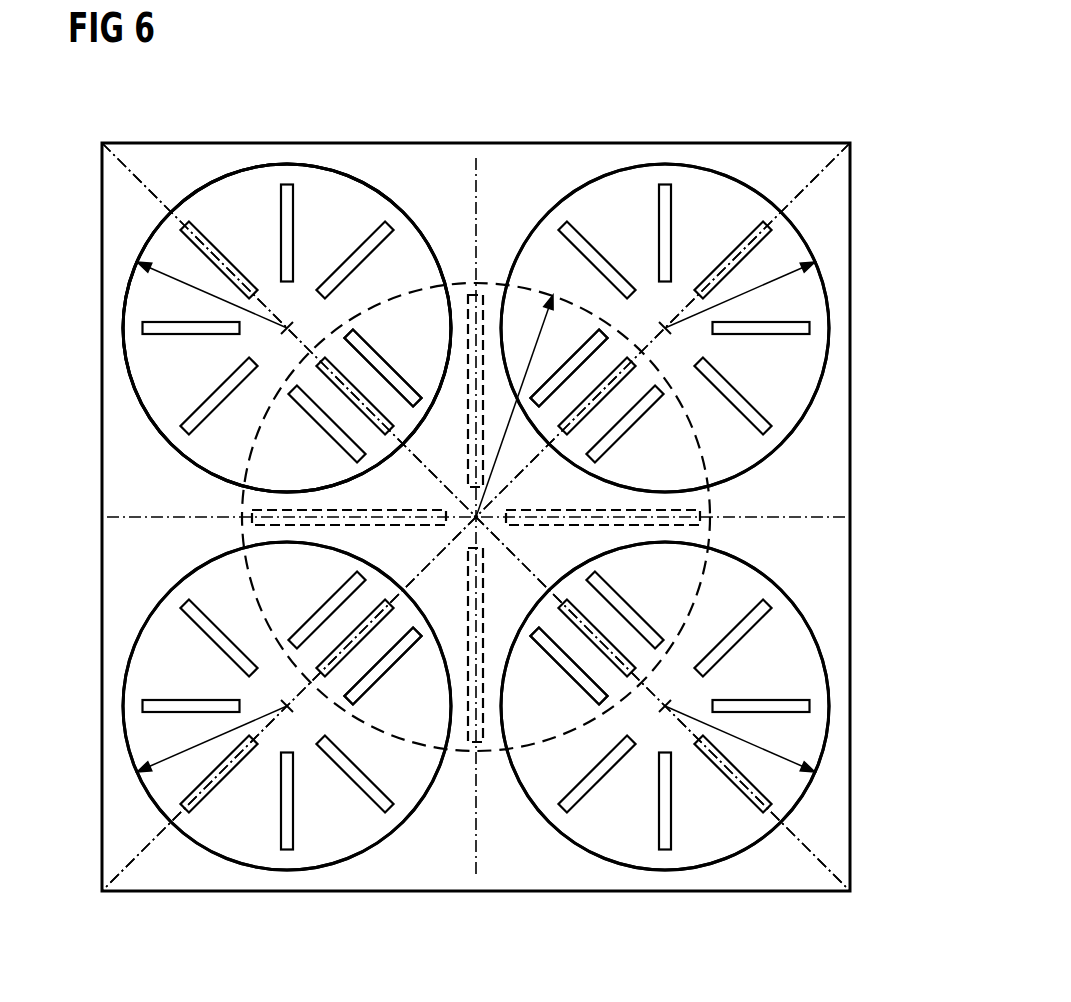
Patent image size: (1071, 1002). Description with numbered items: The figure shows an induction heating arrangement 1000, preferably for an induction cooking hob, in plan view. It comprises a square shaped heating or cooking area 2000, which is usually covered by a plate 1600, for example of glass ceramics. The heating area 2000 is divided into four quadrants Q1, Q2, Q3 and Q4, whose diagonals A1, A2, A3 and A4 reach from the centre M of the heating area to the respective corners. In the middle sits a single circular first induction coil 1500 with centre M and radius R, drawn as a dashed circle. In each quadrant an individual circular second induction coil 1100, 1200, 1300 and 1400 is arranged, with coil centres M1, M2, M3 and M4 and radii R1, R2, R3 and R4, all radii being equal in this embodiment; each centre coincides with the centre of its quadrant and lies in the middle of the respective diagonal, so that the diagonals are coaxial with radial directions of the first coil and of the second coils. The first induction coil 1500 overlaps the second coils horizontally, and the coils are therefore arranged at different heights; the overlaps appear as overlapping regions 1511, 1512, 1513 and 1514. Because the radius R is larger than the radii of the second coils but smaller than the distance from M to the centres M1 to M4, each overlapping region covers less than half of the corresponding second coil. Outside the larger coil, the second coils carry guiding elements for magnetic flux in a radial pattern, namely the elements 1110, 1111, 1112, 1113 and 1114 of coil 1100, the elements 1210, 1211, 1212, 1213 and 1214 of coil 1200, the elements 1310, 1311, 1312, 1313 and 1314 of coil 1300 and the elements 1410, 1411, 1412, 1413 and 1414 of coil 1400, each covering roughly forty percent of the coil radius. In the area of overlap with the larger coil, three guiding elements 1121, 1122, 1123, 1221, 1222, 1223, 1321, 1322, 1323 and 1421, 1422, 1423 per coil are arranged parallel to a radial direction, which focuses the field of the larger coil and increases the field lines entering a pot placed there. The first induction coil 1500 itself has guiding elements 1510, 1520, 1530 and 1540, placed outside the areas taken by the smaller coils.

The induction heating arrangement 1000 is at (803, 76).
The heating area 2000 is at (670, 143).
The plate 1600 is at (330, 166).
The first induction coil 1500 is at (471, 516).
The guiding element for magnetic flux 1510 is at (677, 510).
The guiding element for magnetic flux 1520 is at (467, 748).
The guiding element for magnetic flux 1530 is at (275, 510).
The guiding element for magnetic flux 1540 is at (468, 322).
The overlapping region 1511 is at (535, 330).
The overlapping region 1512 is at (542, 678).
The overlapping region 1513 is at (410, 678).
The overlapping region 1514 is at (409, 341).
The second induction coil 1100 is at (713, 282).
The guiding element for magnetic flux 1110 is at (561, 224).
The guiding element for magnetic flux 1111 is at (658, 243).
The guiding element for magnetic flux 1112 is at (743, 242).
The guiding element for magnetic flux 1113 is at (809, 328).
The guiding element for magnetic flux 1114 is at (749, 405).
The guiding element for magnetic flux 1121 is at (594, 346).
The guiding element for magnetic flux 1122 is at (589, 406).
The guiding element for magnetic flux 1123 is at (591, 457).
The second induction coil 1200 is at (713, 760).
The guiding element for magnetic flux 1210 is at (739, 646).
The guiding element for magnetic flux 1211 is at (809, 706).
The guiding element for magnetic flux 1212 is at (772, 812).
The guiding element for magnetic flux 1213 is at (671, 828).
The guiding element for magnetic flux 1214 is at (587, 790).
The guiding element for magnetic flux 1221 is at (591, 577).
The guiding element for magnetic flux 1222 is at (589, 628).
The guiding element for magnetic flux 1223 is at (594, 688).
The second induction coil 1300 is at (234, 760).
The guiding element for magnetic flux 1310 is at (365, 790).
The guiding element for magnetic flux 1311 is at (281, 828).
The guiding element for magnetic flux 1312 is at (180, 813).
The guiding element for magnetic flux 1313 is at (143, 706).
The guiding element for magnetic flux 1314 is at (213, 646).
The guiding element for magnetic flux 1321 is at (358, 688).
The guiding element for magnetic flux 1322 is at (363, 628).
The guiding element for magnetic flux 1323 is at (361, 577).
The second induction coil 1400 is at (234, 282).
The guiding element for magnetic flux 1410 is at (203, 405).
The guiding element for magnetic flux 1411 is at (143, 328).
The guiding element for magnetic flux 1412 is at (209, 242).
The guiding element for magnetic flux 1413 is at (294, 243).
The guiding element for magnetic flux 1414 is at (391, 224).
The guiding element for magnetic flux 1421 is at (361, 457).
The guiding element for magnetic flux 1422 is at (363, 406).
The guiding element for magnetic flux 1423 is at (358, 346).
The diagonal A1 is at (830, 164).
The diagonal A2 is at (809, 918).
The diagonal A3 is at (131, 862).
The diagonal A4 is at (122, 164).
The quadrant Q1 is at (807, 213).
The quadrant Q2 is at (812, 826).
The quadrant Q3 is at (140, 778).
The quadrant Q4 is at (145, 213).
The centre M is at (482, 516).
The centre M1 is at (667, 322).
The centre M2 is at (667, 712).
The centre M3 is at (285, 712).
The centre M4 is at (285, 322).
The radius R is at (499, 466).
The radius R1 is at (724, 300).
The radius R2 is at (724, 734).
The radius R3 is at (228, 734).
The radius R4 is at (228, 300).